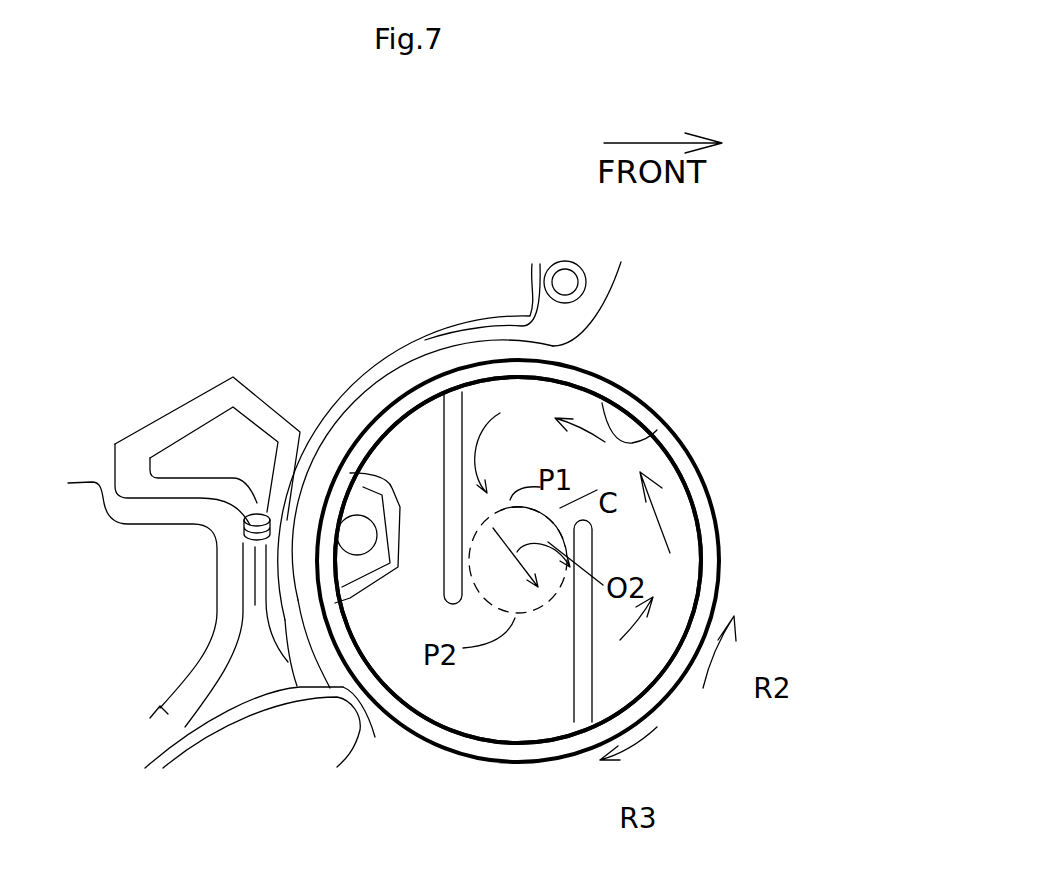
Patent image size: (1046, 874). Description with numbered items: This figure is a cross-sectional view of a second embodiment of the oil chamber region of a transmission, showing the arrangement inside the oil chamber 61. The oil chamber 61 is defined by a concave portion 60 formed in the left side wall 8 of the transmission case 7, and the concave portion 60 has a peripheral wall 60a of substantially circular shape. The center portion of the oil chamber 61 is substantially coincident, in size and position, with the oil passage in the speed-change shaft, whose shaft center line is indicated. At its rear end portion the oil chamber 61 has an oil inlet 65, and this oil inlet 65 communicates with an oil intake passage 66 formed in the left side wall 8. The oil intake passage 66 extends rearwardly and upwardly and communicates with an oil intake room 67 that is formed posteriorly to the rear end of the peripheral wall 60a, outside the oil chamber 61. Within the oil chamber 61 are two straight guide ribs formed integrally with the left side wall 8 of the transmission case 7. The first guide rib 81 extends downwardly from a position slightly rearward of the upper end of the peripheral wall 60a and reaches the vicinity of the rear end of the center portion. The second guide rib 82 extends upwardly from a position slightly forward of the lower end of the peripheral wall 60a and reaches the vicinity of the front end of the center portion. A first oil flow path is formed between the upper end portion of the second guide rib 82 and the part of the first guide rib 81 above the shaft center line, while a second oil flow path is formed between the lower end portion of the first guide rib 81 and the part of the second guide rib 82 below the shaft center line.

The transmission case 7 is at (331, 348).
The left side wall 8 is at (668, 343).
The concave portion 60 is at (652, 434).
The peripheral wall 60a is at (690, 478).
The oil chamber 61 is at (460, 707).
The oil inlet 65 is at (360, 533).
The oil intake passage 66 is at (328, 574).
The oil intake room 67 is at (210, 448).
The first guide rib 81 is at (453, 527).
The second guide rib 82 is at (577, 667).